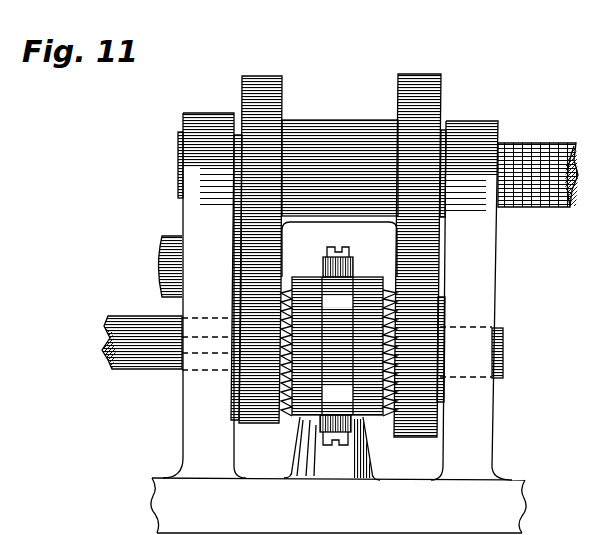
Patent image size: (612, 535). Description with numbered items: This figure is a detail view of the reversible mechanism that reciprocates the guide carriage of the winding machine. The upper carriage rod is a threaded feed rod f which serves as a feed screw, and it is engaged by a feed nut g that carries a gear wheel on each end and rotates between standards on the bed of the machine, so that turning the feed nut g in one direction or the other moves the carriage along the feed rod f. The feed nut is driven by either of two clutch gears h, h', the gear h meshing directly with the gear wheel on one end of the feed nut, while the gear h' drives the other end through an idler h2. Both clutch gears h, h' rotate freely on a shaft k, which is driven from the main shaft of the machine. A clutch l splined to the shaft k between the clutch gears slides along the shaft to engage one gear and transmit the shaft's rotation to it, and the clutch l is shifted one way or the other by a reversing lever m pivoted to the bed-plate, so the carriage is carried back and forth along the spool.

The threaded feed rod f is at (579, 117).
The feed nut g is at (356, 120).
The clutch gear h is at (420, 272).
The clutch gear h' is at (260, 375).
The idler h2 is at (258, 260).
The shaft k is at (133, 323).
The clutch l is at (367, 280).
The reversing lever m is at (333, 257).